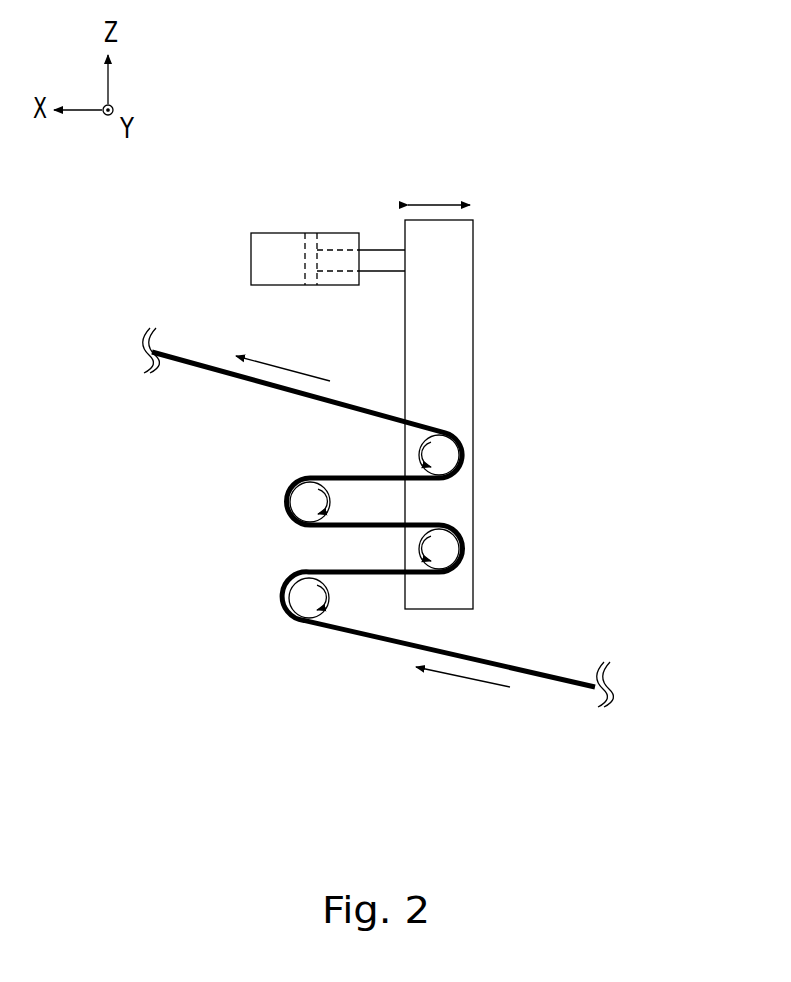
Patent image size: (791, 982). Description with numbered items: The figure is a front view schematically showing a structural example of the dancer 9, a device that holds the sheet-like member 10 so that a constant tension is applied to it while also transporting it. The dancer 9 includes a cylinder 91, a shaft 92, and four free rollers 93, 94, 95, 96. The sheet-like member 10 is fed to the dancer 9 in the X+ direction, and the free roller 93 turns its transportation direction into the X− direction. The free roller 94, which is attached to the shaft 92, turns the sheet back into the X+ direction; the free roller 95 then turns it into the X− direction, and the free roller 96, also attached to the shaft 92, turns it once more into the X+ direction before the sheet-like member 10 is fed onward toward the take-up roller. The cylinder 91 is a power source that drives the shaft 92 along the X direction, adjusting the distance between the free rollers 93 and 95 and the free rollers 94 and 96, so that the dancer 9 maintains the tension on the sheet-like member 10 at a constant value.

The dancer 9 is at (372, 114).
The sheet-like member 10 is at (568, 680).
The cylinder 91 is at (289, 243).
The shaft 92 is at (465, 250).
The free roller 93 is at (305, 604).
The free roller 94 is at (449, 553).
The free roller 95 is at (300, 505).
The free roller 96 is at (449, 455).